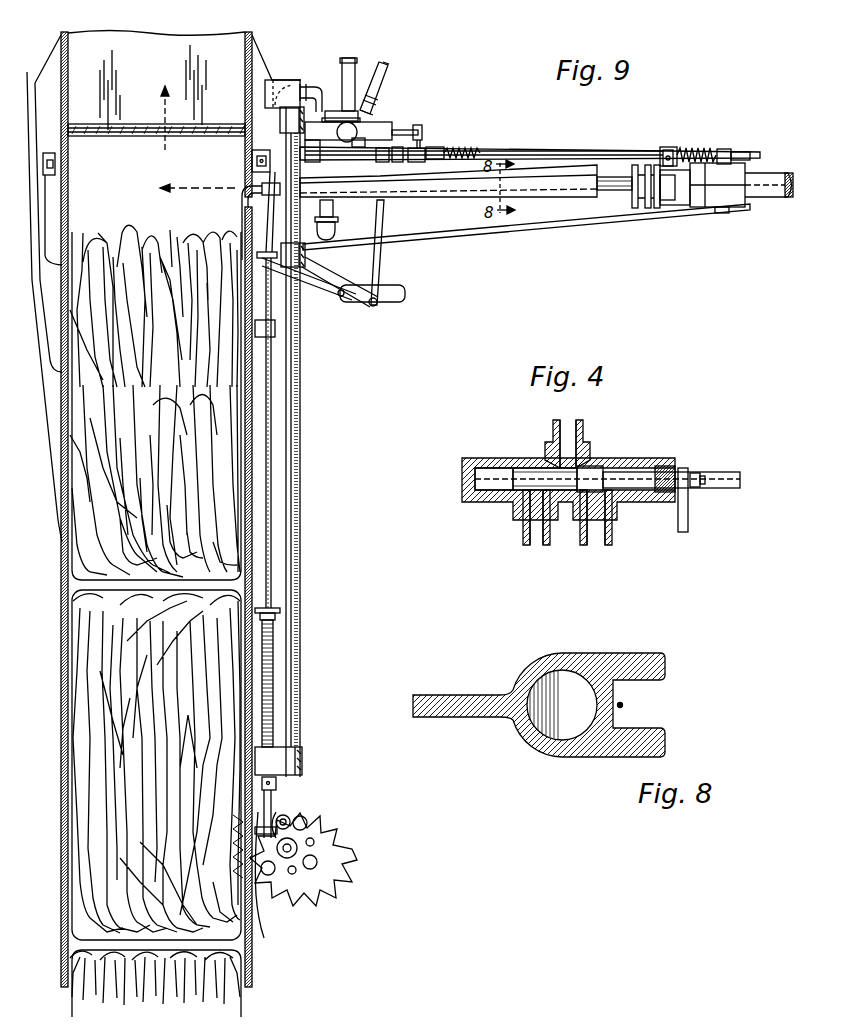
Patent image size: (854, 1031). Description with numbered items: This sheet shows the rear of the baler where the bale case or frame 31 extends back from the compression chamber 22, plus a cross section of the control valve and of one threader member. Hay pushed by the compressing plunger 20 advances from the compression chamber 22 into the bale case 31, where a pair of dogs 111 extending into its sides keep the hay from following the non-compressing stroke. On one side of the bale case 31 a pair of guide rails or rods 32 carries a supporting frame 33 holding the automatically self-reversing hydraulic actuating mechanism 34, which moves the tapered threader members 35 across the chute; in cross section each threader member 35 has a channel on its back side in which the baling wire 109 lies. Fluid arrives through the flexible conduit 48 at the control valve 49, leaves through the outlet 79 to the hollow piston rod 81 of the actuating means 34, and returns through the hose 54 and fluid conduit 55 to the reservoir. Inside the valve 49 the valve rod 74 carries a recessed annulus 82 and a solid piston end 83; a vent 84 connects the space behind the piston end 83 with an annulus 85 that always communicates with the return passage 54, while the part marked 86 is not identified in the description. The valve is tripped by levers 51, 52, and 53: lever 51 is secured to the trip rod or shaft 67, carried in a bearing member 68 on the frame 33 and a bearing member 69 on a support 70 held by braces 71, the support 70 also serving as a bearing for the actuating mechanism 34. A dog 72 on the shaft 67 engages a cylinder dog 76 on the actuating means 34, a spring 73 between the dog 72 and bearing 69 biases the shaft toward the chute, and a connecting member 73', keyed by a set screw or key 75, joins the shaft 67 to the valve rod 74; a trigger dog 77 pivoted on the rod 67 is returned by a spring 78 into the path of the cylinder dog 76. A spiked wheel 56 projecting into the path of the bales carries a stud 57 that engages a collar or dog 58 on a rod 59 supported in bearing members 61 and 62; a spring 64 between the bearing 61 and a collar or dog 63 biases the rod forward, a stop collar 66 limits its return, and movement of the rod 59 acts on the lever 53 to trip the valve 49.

In FIG. 9, the compression chamber 22 is at (233, 46).
In FIG. 9, the compressing plunger 20 is at (192, 130).
In FIG. 9, the dogs 111 is at (69, 244).
In FIG. 9, the baling wire 109 is at (240, 207).
In FIG. 8, the baling wire 109 is at (621, 705).
In FIG. 9, the outlet 79 is at (305, 95).
In FIG. 4, the outlet 79 is at (533, 541).
In FIG. 9, the flexible conduit 48 is at (348, 74).
In FIG. 4, the flexible conduit 48 is at (570, 428).
In FIG. 9, the hose 54 is at (383, 79).
In FIG. 4, the hose 54 is at (608, 543).
In FIG. 9, the control valve 49 is at (378, 124).
In FIG. 4, the control valve 49 is at (497, 458).
In FIG. 9, the valve rod 74 is at (412, 126).
In FIG. 4, the valve rod 74 is at (700, 474).
In FIG. 9, the connecting member 73' is at (436, 133).
In FIG. 4, the connecting member 73' is at (700, 500).
In FIG. 9, the trigger dog 77 is at (448, 152).
In FIG. 9, the spring 78 is at (470, 150).
In FIG. 9, the trip rod 67 is at (520, 150).
In FIG. 9, the braces 71 is at (560, 148).
In FIG. 9, the cylinder dog 76 is at (666, 156).
In FIG. 9, the dog 72 is at (672, 158).
In FIG. 9, the spring 73 is at (702, 140).
In FIG. 9, the bearing member 69 is at (727, 155).
In FIG. 9, the support 70 is at (720, 207).
In FIG. 9, the hydraulic actuating mechanism 34 is at (755, 197).
In FIG. 9, the hollow piston rod 81 is at (605, 192).
In FIG. 9, the threader members 35 is at (546, 189).
In FIG. 8, the threader members 35 is at (603, 655).
In FIG. 9, the lever 52 is at (380, 262).
In FIG. 9, the supporting frame 33 is at (308, 255).
In FIG. 9, the lever 53 is at (352, 298).
In FIG. 9, the bearing member 62 is at (278, 332).
In FIG. 9, the fluid conduit 55 is at (338, 206).
In FIG. 9, the bearing member 68 is at (347, 163).
In FIG. 9, the lever 51 is at (385, 162).
In FIG. 9, the set screw 75 is at (393, 164).
In FIG. 9, the rod 59 is at (271, 590).
In FIG. 9, the collar 63 is at (283, 612).
In FIG. 9, the spring 64 is at (274, 666).
In FIG. 9, the guide rails 32 is at (297, 713).
In FIG. 9, the bearing member 61 is at (277, 756).
In FIG. 9, the stop collar 66 is at (280, 781).
In FIG. 9, the stud 57 is at (302, 818).
In FIG. 9, the spiked wheel 56 is at (352, 862).
In FIG. 9, the collar 58 is at (259, 908).
In FIG. 9, the bale case 31 is at (60, 688).
In FIG. 4, the vent 84 is at (478, 460).
In FIG. 4, the solid piston end 83 is at (485, 491).
In FIG. 4, the recessed annulus 82 is at (520, 467).
In FIG. 4, the spool land 86 is at (590, 467).
In FIG. 4, the annulus 85 is at (614, 469).